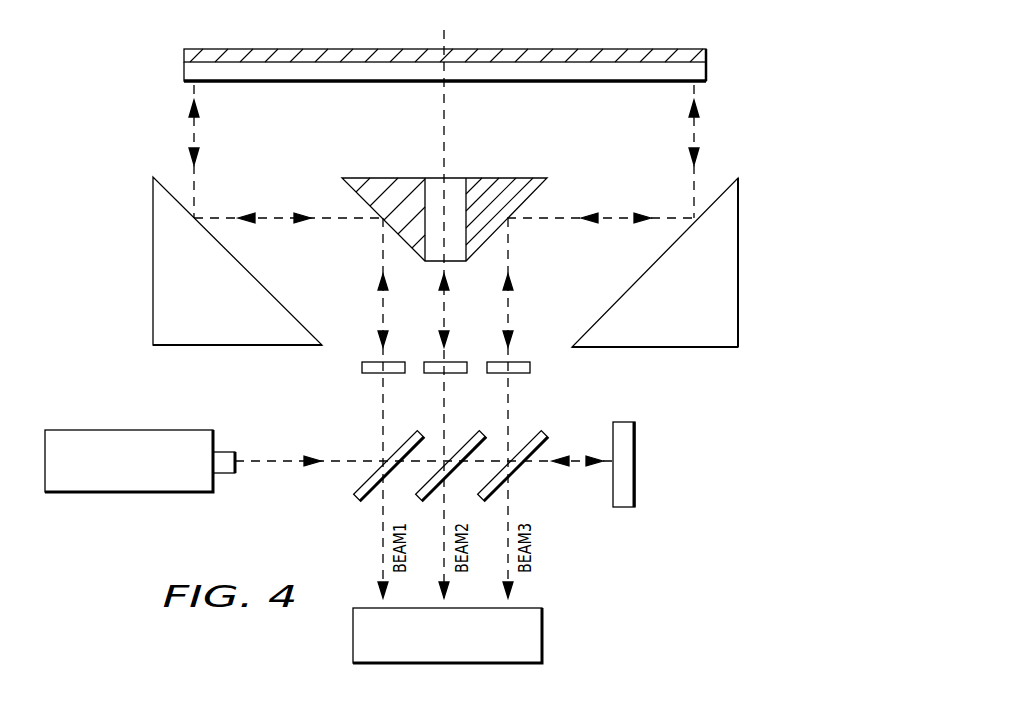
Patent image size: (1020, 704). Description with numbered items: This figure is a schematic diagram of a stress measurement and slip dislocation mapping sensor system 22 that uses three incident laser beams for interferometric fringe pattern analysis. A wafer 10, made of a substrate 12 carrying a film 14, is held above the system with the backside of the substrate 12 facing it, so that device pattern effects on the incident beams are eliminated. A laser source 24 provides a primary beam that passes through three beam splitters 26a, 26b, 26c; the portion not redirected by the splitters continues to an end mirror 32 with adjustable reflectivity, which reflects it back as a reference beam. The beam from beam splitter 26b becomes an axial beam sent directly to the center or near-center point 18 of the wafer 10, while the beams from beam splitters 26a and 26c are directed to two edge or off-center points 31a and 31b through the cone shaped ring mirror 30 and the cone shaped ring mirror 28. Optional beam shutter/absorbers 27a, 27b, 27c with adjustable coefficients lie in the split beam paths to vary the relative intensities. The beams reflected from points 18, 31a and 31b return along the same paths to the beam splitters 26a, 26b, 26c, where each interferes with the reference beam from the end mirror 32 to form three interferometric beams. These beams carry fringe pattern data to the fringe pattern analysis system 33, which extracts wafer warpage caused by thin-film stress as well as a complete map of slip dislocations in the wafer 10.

The wafer 10 is at (414, 64).
The substrate 12 is at (257, 83).
The film 14 is at (243, 48).
The center or near-center point 18 is at (445, 85).
The stress measurement and slip dislocation mapping sensor system 22 is at (76, 224).
The laser source 24 is at (213, 486).
The beam splitter 26a is at (358, 482).
The beam splitter 26b is at (457, 440).
The beam splitter 26c is at (525, 473).
The beam shutter/absorber 27a is at (370, 360).
The beam shutter/absorber 27b is at (433, 360).
The beam shutter/absorber 27c is at (495, 360).
The cone shaped ring mirror 28 is at (153, 305).
The cone shaped ring mirror 30 is at (515, 177).
The edge point 31a is at (190, 86).
The edge point 31b is at (697, 86).
The end mirror 32 is at (625, 507).
The fringe pattern analysis system 33 is at (542, 636).